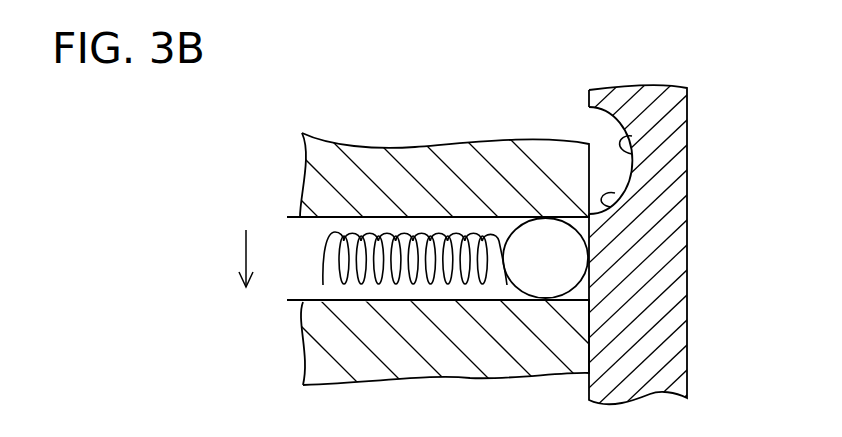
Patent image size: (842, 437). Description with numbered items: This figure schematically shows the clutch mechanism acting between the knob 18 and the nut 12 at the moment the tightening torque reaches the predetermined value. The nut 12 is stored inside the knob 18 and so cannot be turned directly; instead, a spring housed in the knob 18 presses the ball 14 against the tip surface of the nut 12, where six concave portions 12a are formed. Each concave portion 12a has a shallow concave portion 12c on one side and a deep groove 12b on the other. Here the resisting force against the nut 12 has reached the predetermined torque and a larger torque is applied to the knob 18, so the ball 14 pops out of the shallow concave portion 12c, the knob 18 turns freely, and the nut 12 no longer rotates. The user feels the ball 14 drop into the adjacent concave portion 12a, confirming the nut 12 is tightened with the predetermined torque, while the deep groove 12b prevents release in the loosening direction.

The nut 12 is at (657, 110).
The concave portion 12a is at (595, 117).
The deep groove 12b is at (635, 155).
The shallow concave portion 12c is at (614, 205).
The ball 14 is at (568, 262).
The knob 18 is at (427, 157).